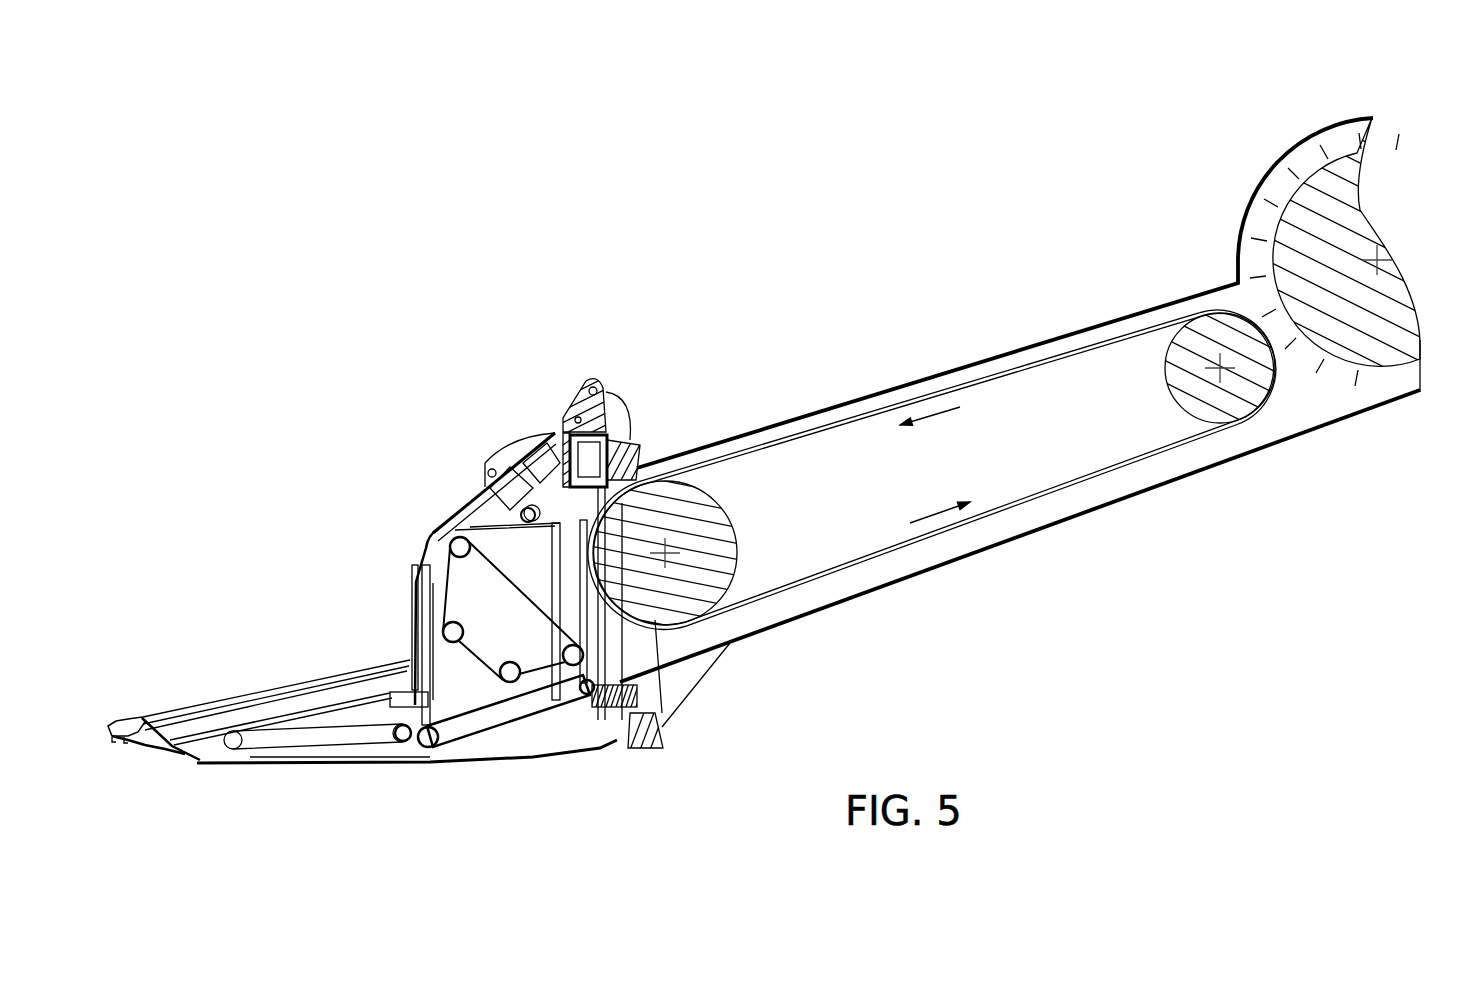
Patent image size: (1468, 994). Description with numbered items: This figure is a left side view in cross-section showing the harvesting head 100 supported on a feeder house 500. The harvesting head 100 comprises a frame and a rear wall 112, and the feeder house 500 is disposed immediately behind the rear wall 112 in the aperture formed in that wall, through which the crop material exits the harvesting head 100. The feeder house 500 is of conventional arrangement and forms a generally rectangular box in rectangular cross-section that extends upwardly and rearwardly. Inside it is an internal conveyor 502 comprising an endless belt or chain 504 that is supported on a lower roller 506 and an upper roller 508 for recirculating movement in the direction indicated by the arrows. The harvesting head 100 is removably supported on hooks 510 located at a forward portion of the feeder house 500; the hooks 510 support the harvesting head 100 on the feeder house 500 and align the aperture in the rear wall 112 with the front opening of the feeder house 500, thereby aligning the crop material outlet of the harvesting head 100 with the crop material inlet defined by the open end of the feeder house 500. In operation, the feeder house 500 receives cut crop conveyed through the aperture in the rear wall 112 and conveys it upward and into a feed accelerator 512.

The harvesting head 100 is at (325, 450).
The rear wall 112 is at (640, 503).
The feeder house 500 is at (1003, 262).
The internal conveyor 502 is at (1008, 517).
The endless belt or chain 504 is at (873, 407).
The lower roller 506 is at (723, 505).
The upper roller 508 is at (1165, 348).
The hooks 510 is at (557, 392).
The feed accelerator 512 is at (1323, 140).